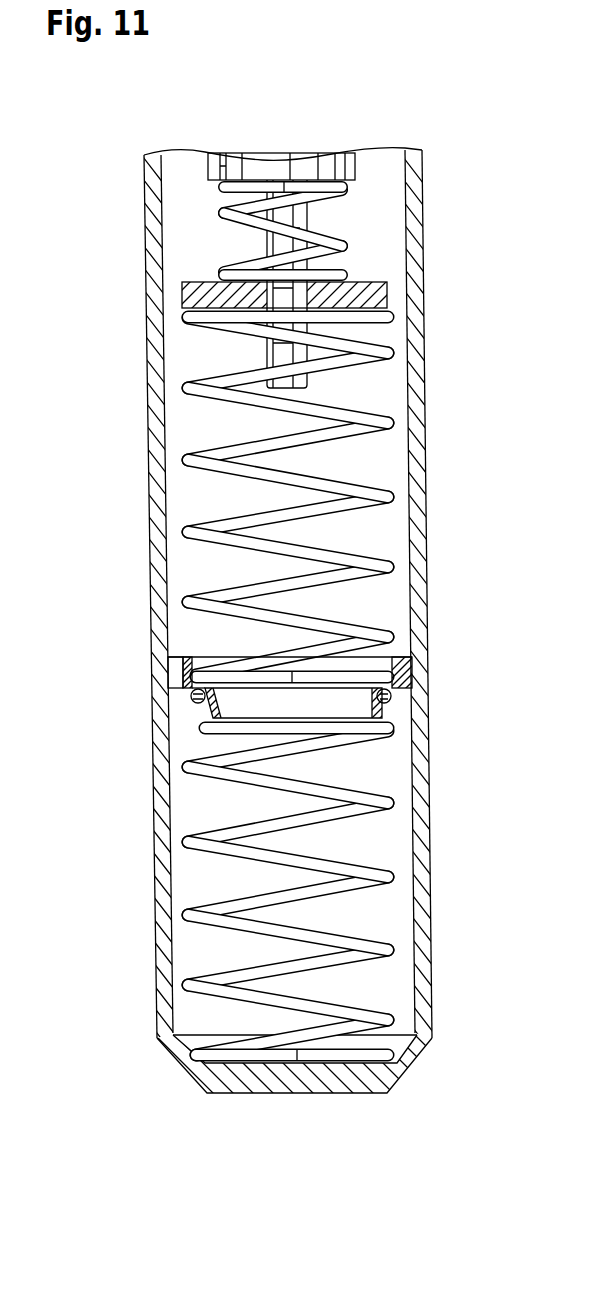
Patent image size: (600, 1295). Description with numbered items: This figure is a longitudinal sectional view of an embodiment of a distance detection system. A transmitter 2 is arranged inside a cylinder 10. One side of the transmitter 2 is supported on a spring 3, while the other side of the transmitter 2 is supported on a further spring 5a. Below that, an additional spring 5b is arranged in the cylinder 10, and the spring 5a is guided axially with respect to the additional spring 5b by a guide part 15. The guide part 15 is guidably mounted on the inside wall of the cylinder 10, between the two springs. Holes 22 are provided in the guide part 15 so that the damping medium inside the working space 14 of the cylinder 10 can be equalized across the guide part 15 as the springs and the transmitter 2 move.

The transmitter 2 is at (363, 296).
The spring 3 is at (350, 183).
The spring 5a is at (365, 497).
The additional spring 5b is at (370, 878).
The cylinder 10 is at (417, 580).
The working space 14 is at (188, 498).
The guide part 15 is at (404, 668).
The holes 22 is at (182, 667).